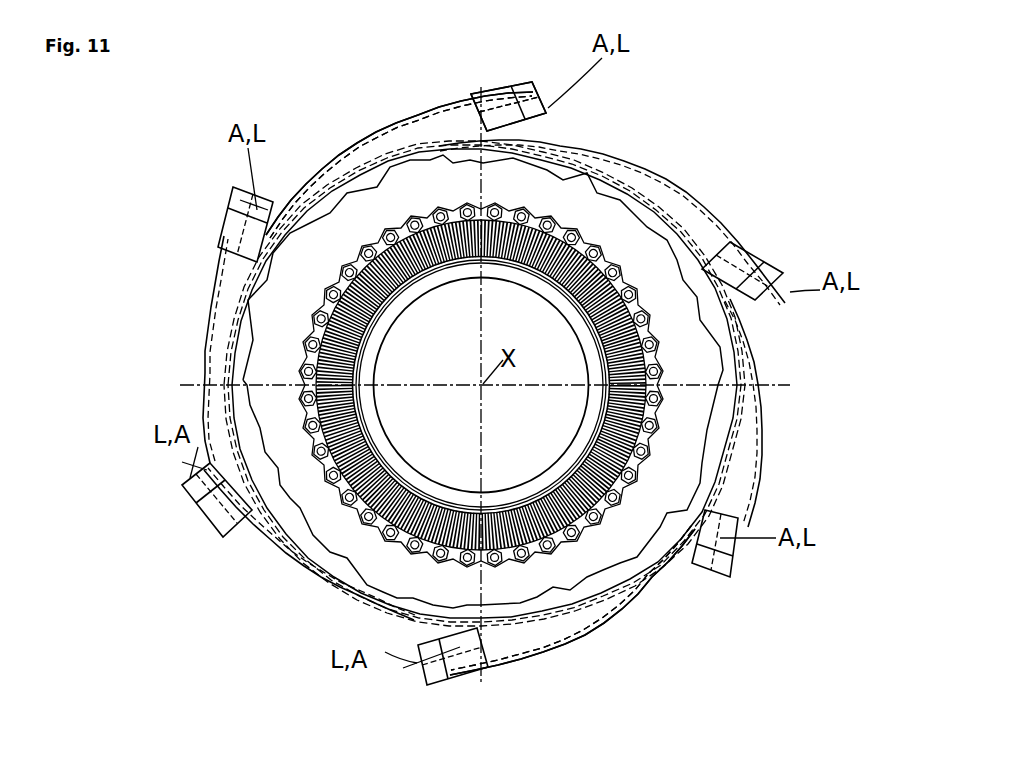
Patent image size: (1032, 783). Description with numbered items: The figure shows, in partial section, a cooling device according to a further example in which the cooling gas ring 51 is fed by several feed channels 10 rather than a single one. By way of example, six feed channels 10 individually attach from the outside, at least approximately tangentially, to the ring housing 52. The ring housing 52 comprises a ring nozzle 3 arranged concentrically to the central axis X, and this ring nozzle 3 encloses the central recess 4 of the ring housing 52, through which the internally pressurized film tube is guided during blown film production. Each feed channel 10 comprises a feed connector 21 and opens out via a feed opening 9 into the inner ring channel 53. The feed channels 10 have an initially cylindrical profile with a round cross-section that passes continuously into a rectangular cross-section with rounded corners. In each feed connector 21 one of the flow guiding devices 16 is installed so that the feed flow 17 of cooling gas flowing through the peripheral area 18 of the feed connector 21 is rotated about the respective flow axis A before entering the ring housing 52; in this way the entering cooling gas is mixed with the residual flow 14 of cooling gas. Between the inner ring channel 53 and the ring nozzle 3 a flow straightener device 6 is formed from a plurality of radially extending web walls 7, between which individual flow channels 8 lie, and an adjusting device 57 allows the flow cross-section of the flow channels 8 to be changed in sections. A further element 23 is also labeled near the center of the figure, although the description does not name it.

The ring nozzle 3 is at (372, 345).
The central recess 4 is at (525, 437).
The flow straightener device 6 is at (437, 280).
The web walls 7 is at (441, 500).
The flow channels 8 is at (467, 500).
The feed opening 9 is at (477, 100).
The feed channel 10 is at (548, 111).
The residual flow 14 is at (720, 335).
The flow guiding device 16 is at (540, 92).
The feed flow 17 is at (660, 193).
The peripheral area 18 is at (403, 123).
The feed connector 21 is at (505, 80).
The hub ring 23 is at (510, 278).
The cooling gas ring 51 is at (651, 130).
The ring housing 52 is at (650, 580).
The inner ring channel 53 is at (360, 233).
The adjusting device 57 is at (383, 233).